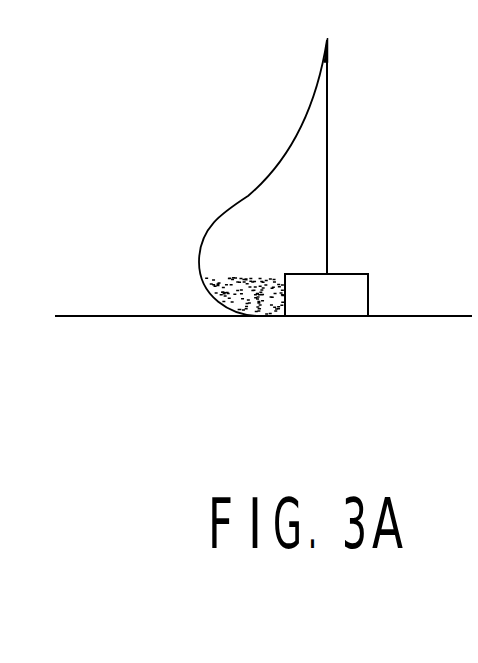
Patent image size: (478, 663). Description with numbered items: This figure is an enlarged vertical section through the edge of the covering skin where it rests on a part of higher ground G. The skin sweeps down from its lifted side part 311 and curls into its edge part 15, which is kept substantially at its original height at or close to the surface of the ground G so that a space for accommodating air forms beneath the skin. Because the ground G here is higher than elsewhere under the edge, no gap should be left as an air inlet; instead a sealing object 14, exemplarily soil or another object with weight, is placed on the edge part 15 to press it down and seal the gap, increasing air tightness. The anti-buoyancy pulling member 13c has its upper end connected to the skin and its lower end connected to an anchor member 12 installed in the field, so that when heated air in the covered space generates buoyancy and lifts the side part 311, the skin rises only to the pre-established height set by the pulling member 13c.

The ground G is at (107, 316).
The anchor member 12 is at (331, 300).
The anti-buoyancy pulling member 13c is at (328, 127).
The side part 311 is at (325, 61).
The sealing object 14 is at (258, 288).
The edge part 15 is at (206, 230).